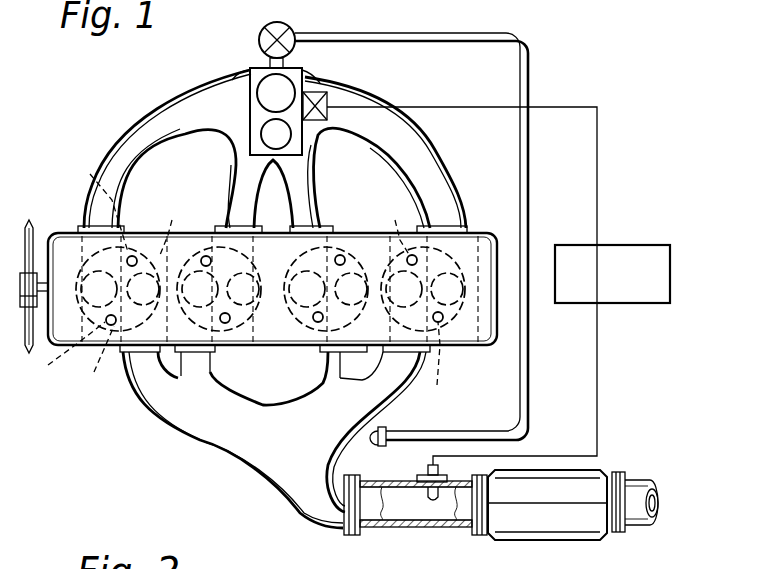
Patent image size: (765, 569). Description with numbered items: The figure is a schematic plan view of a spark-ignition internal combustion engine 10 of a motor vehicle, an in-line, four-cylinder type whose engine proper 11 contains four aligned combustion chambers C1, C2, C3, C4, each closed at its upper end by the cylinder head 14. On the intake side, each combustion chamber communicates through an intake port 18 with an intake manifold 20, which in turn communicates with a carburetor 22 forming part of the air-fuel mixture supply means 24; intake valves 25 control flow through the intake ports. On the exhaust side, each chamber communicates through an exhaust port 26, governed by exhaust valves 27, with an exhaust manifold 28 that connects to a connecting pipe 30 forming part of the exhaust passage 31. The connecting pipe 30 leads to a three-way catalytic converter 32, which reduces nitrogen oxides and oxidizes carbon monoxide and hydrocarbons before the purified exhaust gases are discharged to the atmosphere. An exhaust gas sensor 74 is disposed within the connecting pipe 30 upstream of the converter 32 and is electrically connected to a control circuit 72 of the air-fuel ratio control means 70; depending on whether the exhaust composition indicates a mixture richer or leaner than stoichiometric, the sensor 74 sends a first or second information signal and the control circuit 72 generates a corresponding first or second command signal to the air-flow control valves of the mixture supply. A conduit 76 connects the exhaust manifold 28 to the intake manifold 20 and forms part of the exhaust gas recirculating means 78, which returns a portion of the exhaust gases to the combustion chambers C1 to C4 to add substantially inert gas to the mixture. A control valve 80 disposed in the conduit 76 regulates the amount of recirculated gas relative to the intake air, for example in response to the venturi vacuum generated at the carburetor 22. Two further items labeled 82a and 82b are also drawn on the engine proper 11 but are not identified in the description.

The spark-ignition internal combustion engine 10 is at (47, 103).
The engine proper 11 is at (50, 218).
The cylinder head 14 is at (83, 346).
The intake port 18 is at (66, 235).
The intake manifold 20 is at (262, 118).
The carburetor 22 is at (257, 67).
The air-fuel mixture supply means 24 is at (178, 90).
The intake valves 25 is at (480, 356).
The exhaust port 26 is at (140, 378).
The exhaust valves 27 is at (345, 220).
The exhaust manifold 28 is at (270, 436).
The connecting pipe 30 is at (360, 514).
The exhaust passage 31 is at (402, 540).
The three-way catalytic converter 32 is at (532, 528).
The air-fuel ratio control means 70 is at (482, 246).
The control circuit 72 is at (640, 244).
The exhaust gas sensor 74 is at (418, 470).
The conduit 76 is at (530, 165).
The exhaust gas recirculating means 78 is at (540, 46).
The control valve 80 is at (292, 26).
The sensor hole 82a is at (438, 365).
The sensor hole 82b is at (233, 275).
The combustion chamber C1 is at (133, 255).
The combustion chamber C2 is at (212, 257).
The combustion chamber C3 is at (312, 320).
The combustion chamber C4 is at (470, 280).